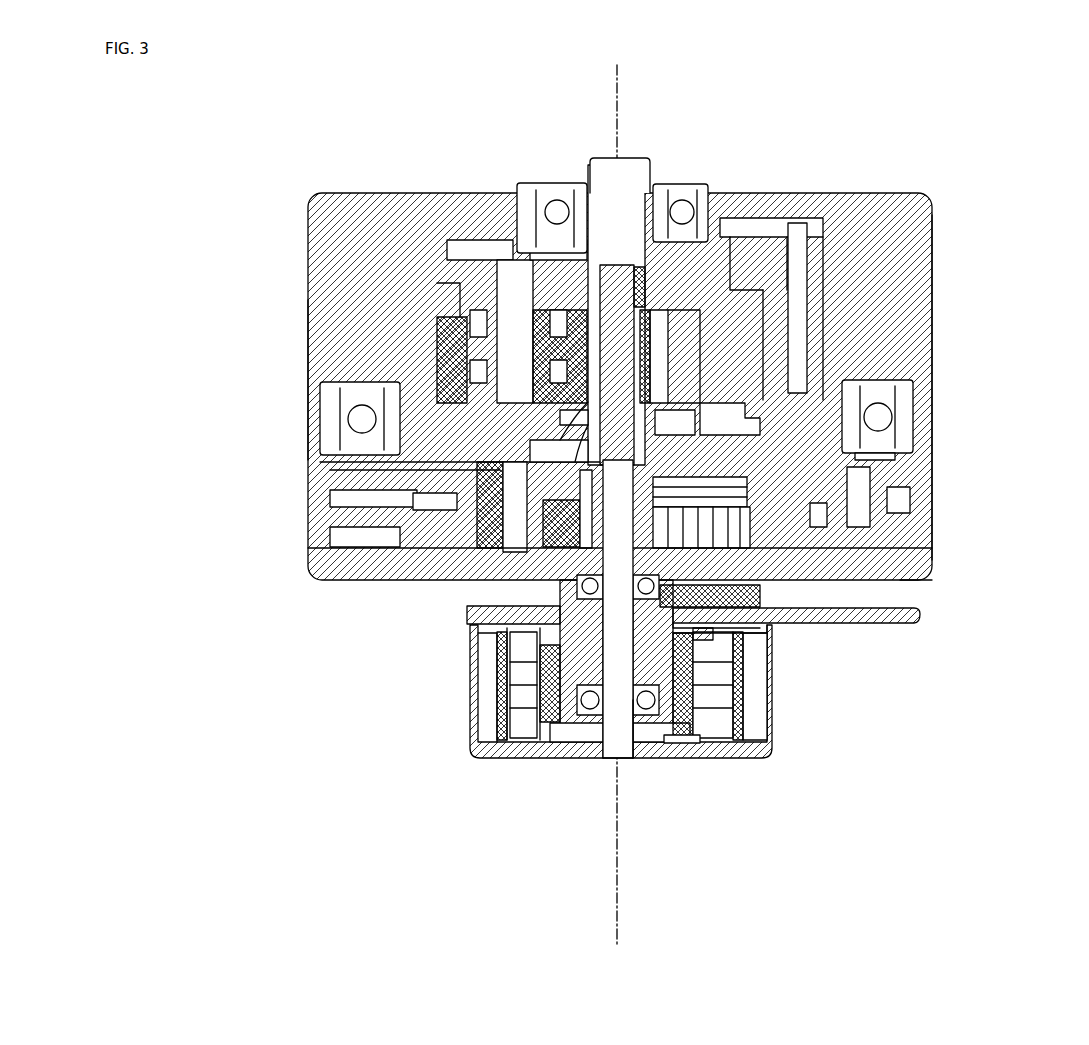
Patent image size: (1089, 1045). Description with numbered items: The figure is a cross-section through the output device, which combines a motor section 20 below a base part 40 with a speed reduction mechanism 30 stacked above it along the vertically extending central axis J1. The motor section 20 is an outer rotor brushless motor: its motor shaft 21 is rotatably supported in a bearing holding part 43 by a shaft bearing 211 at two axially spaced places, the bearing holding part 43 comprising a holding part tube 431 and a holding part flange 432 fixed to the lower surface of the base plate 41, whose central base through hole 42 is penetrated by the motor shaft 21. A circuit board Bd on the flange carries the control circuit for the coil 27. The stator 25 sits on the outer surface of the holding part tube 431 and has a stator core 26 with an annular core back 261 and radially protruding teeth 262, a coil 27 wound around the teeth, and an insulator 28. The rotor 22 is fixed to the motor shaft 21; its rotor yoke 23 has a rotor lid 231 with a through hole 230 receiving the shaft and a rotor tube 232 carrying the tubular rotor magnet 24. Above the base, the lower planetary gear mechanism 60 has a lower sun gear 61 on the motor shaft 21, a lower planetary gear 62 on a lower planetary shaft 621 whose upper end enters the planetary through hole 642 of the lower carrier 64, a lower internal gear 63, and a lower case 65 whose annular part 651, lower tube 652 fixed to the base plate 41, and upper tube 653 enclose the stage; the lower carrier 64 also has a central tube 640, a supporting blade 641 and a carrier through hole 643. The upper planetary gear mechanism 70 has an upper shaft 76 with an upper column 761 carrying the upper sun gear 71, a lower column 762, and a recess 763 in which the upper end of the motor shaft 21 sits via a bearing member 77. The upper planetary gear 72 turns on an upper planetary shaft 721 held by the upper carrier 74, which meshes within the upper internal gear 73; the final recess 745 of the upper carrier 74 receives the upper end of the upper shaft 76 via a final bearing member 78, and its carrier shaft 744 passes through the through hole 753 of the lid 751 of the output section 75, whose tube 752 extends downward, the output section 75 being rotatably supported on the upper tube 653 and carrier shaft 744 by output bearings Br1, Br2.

The central axis J1 is at (622, 82).
The upper planetary gear mechanism 70 is at (304, 318).
The speed reduction mechanism 30 is at (300, 383).
The upper internal gear 73 is at (445, 330).
The upper planetary gear 72 is at (470, 300).
The upper planetary shaft 721 is at (505, 295).
The through hole 753 is at (540, 240).
The final bearing member 78 is at (612, 270).
The carrier shaft 744 is at (636, 270).
The final recess 745 is at (655, 300).
The second bearing Br2 is at (552, 205).
The upper carrier 74 is at (755, 300).
The lid 751 is at (780, 220).
The output section 75 is at (900, 230).
The tube 752 is at (835, 290).
The upper sun gear 71 is at (740, 285).
The upper column 761 is at (680, 345).
The upper shaft 76 is at (690, 385).
The bearing member 77 is at (680, 442).
The central tube 640 is at (690, 446).
The first bearing Br1 is at (895, 420).
The lower column 762 is at (860, 456).
The lower planetary gear mechanism 60 is at (304, 485).
The lower case 65 is at (340, 458).
The upper tube 653 is at (480, 455).
The annular part 651 is at (400, 490).
The lower tube 652 is at (400, 500).
The lower internal gear 63 is at (400, 528).
The lower planetary gear 62 is at (500, 540).
The lower planetary shaft 621 is at (515, 520).
The supporting blade 641 is at (530, 448).
The recess 763 is at (560, 418).
The carrier through hole 643 is at (570, 455).
The planetary through hole 642 is at (575, 520).
The lower carrier 64 is at (875, 480).
The lower sun gear 61 is at (880, 515).
The base part 40 is at (300, 573).
The base plate 41 is at (920, 573).
The motor shaft 21 is at (612, 735).
The base through hole 42 is at (765, 595).
The circuit board Bd is at (922, 617).
The holding part flange 432 is at (740, 622).
The motor section 20 is at (775, 695).
The rotor yoke 23 is at (765, 755).
The rotor 22 is at (740, 742).
The stator core 26 is at (492, 735).
The teeth 262 is at (510, 690).
The stator 25 is at (488, 672).
The core back 261 is at (548, 720).
The coil 27 is at (560, 740).
The insulator 28 is at (575, 740).
The rotor magnet 24 is at (705, 670).
The rotor tube 232 is at (740, 700).
The bearing holding part 43 is at (700, 655).
The holding part tube 431 is at (715, 640).
The rotor lid 231 is at (686, 745).
The shaft bearing 211 is at (640, 740).
The through hole 230 is at (622, 760).